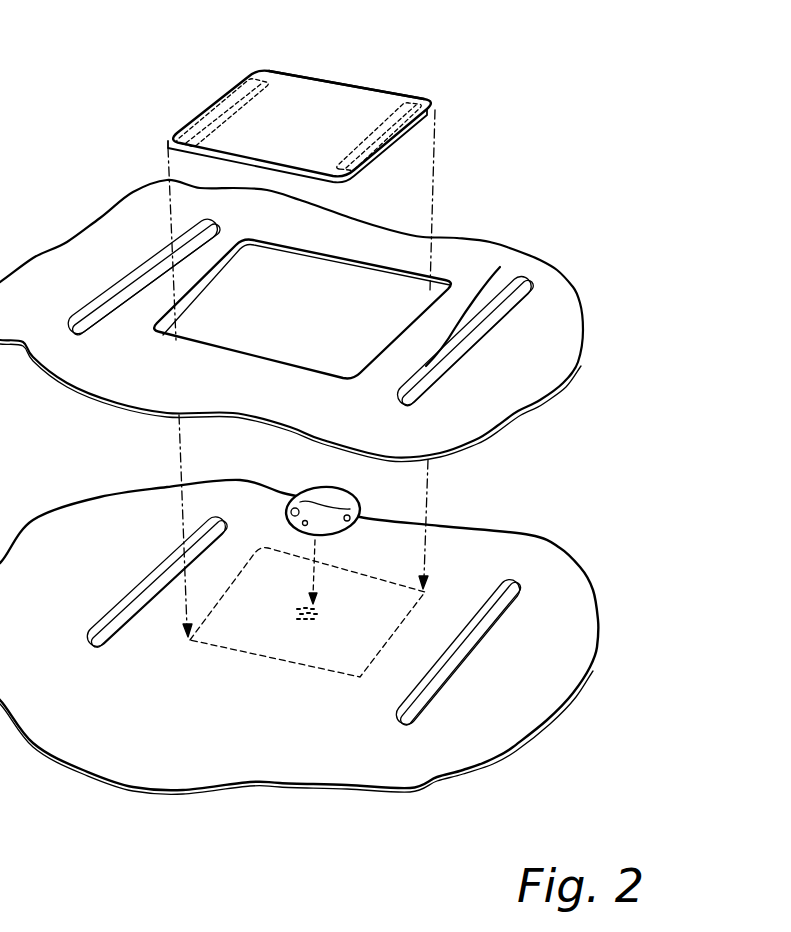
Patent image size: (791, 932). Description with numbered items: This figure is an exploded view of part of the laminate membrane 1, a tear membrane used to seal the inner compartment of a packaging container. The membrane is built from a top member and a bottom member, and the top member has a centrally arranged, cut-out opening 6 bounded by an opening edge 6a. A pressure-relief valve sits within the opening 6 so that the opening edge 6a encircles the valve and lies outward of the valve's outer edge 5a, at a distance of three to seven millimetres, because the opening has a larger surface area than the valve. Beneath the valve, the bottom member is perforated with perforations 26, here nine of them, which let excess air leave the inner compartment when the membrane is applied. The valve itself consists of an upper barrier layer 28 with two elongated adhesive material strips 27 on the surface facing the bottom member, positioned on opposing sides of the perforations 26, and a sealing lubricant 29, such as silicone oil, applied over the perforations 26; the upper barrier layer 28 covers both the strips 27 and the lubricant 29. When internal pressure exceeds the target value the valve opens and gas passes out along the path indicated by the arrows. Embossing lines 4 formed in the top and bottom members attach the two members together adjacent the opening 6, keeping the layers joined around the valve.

The laminate membrane 1 is at (620, 640).
The embossing lines 4 is at (460, 342).
The outer edge of the valve 5a is at (437, 102).
The opening 6 is at (378, 296).
The opening edge 6a is at (453, 330).
The perforations 26 is at (303, 622).
The elongated adhesive material strips 27 is at (190, 122).
The upper barrier layer 28 is at (373, 107).
The sealing lubricant 29 is at (340, 500).